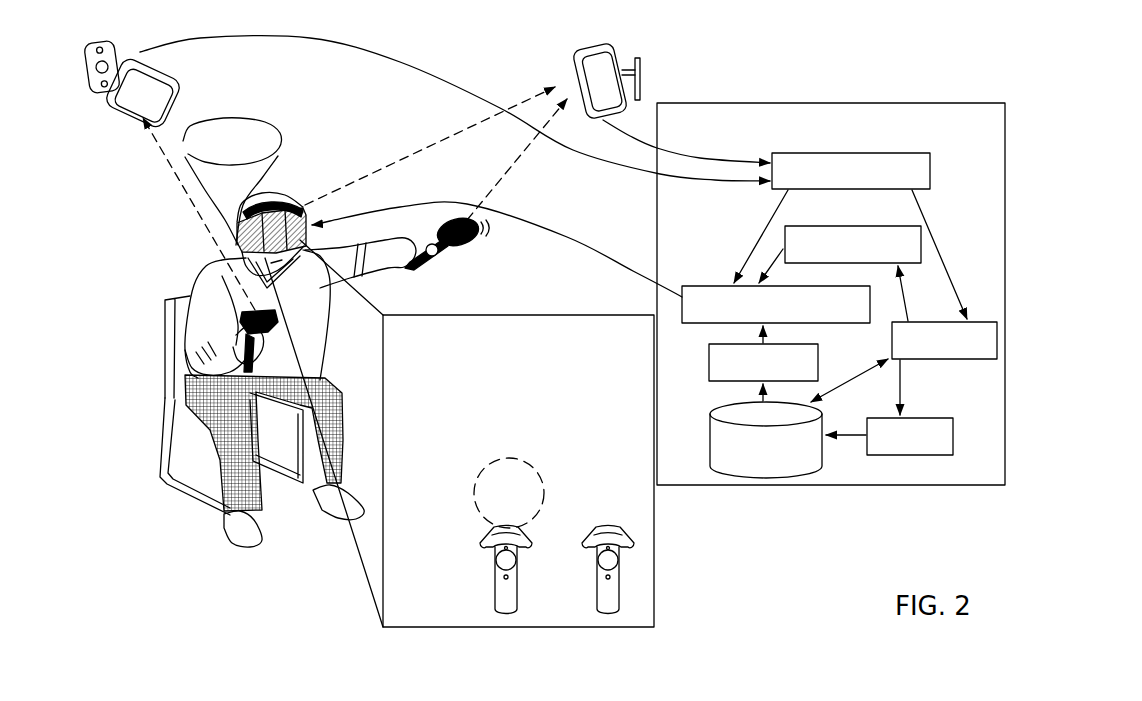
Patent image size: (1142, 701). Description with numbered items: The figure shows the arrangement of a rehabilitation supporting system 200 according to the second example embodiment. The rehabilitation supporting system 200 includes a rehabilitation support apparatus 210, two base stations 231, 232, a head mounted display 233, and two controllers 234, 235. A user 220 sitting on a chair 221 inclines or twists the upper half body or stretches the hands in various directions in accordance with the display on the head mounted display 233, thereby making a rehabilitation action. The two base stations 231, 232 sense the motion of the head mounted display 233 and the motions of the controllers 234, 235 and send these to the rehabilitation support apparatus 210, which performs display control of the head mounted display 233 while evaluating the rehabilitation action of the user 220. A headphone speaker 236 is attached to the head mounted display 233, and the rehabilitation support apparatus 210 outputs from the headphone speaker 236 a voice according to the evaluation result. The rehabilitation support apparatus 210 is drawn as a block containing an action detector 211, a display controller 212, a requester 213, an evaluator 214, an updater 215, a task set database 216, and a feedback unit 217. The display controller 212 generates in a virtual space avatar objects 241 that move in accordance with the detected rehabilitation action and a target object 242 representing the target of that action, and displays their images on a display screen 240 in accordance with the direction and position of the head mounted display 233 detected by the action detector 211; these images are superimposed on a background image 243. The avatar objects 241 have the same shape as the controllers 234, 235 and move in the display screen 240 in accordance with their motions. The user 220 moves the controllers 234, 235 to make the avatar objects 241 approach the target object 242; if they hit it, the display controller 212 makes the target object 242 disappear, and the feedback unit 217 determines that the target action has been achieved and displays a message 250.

The rehabilitation supporting system 200 is at (862, 66).
The rehabilitation support apparatus 210 is at (771, 103).
The action detector 211 is at (931, 176).
The display controller 212 is at (697, 324).
The requester 213 is at (819, 356).
The evaluator 214 is at (985, 360).
The updater 215 is at (933, 418).
The task set database 216 is at (823, 424).
The feedback unit 217 is at (857, 226).
The user 220 is at (208, 272).
The chair 221 is at (173, 328).
The base station 231 is at (127, 113).
The base station 232 is at (577, 79).
The head mounted display 233 is at (294, 207).
The controller 234 is at (478, 246).
The controller 235 is at (270, 326).
The headphone speaker 236 is at (228, 242).
The display screen 240 is at (655, 572).
The avatar objects 241 is at (520, 560).
The target object 242 is at (481, 475).
The background image 243 is at (573, 338).
The message 250 is at (551, 490).